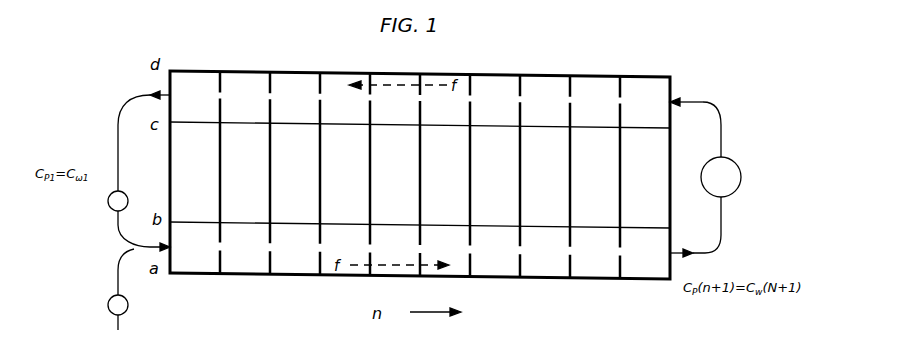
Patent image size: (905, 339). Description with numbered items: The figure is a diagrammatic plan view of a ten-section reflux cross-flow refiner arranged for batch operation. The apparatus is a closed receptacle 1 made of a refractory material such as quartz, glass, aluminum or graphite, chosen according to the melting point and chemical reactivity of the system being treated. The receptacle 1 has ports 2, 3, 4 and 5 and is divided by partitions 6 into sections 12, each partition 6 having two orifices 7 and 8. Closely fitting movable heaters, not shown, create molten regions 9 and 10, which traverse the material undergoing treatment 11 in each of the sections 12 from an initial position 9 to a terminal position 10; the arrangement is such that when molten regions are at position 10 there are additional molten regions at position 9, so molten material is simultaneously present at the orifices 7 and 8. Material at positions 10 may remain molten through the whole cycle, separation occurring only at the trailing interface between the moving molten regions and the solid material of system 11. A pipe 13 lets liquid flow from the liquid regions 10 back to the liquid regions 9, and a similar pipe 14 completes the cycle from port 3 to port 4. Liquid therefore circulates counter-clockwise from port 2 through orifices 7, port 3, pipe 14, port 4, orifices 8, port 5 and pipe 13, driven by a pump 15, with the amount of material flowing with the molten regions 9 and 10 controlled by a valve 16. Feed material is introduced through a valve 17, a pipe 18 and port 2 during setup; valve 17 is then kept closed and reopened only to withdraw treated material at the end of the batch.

The closed receptacle 1 is at (197, 71).
The port 2 is at (160, 250).
The port 3 is at (673, 250).
The port 4 is at (672, 96).
The port 5 is at (168, 92).
The partitions 6 is at (318, 122).
The orifices 7 is at (267, 250).
The orifices 8 is at (512, 100).
The molten regions at initial position 9 is at (507, 267).
The molten regions at terminal position 10 is at (628, 84).
The material undergoing treatment 11 is at (605, 170).
The sections 12 is at (300, 215).
The pipe 13 is at (118, 143).
The pipe 14 is at (721, 137).
The pump 15 is at (738, 191).
The valve 16 is at (109, 206).
The valve 17 is at (128, 311).
The pipe 18 is at (112, 270).